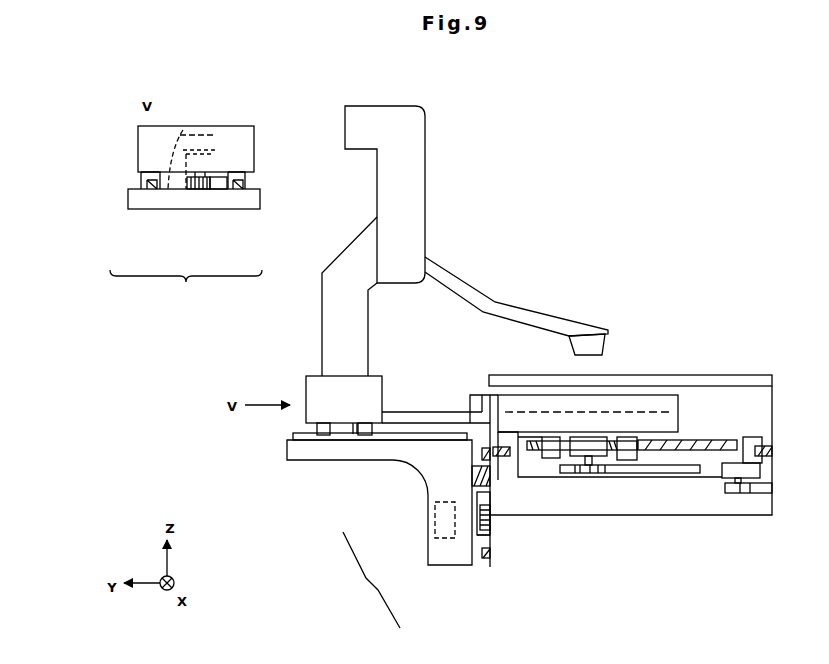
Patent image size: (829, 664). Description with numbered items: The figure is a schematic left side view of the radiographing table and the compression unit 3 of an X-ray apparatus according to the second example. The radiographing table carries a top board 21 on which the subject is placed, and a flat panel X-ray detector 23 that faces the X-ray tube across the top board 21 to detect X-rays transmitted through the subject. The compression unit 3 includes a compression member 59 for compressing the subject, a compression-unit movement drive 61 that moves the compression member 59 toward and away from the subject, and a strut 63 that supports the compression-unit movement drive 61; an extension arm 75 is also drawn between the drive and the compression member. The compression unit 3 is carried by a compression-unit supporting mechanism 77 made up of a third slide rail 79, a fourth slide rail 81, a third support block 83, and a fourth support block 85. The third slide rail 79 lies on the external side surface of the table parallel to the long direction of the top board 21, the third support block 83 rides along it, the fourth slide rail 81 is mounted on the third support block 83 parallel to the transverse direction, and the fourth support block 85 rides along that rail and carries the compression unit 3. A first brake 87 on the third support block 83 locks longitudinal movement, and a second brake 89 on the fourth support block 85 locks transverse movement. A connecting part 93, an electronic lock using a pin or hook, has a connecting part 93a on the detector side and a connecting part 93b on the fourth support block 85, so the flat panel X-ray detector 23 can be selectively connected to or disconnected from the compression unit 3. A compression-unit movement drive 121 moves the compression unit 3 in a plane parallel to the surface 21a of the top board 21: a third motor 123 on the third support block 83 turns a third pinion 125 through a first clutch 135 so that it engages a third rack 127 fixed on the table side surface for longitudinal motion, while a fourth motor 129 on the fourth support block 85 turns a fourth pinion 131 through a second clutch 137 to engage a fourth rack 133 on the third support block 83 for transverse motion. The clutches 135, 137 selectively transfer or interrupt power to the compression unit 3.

The compression unit 3 is at (437, 124).
The top board 21 is at (757, 375).
The surface of the top board 21a is at (718, 373).
The flat panel X-ray detector 23 is at (668, 410).
The compression member 59 is at (602, 343).
The compression-unit movement drive 61 is at (422, 212).
The strut 63 is at (336, 262).
The extension arm 75 is at (522, 306).
The compression-unit supporting mechanism 77 is at (417, 494).
The third slide rail 79 is at (475, 453).
The fourth slide rail 81 is at (148, 180).
The third support block 83 is at (130, 200).
The fourth support block 85 is at (250, 156).
The first brake 87 is at (495, 505).
The second brake 89 is at (344, 419).
The connecting part 93 is at (431, 395).
The connecting part on FPD side 93a is at (487, 405).
The connecting part on compression unit side 93b is at (478, 408).
The compression-unit movement drive 121 is at (255, 449).
The third motor 123 is at (477, 512).
The third pinion 125 is at (480, 560).
The third rack 127 is at (472, 498).
The fourth motor 129 is at (168, 190).
The fourth pinion 131 is at (208, 190).
The fourth rack 133 is at (222, 190).
The first clutch 135 is at (470, 538).
The second clutch 137 is at (190, 190).